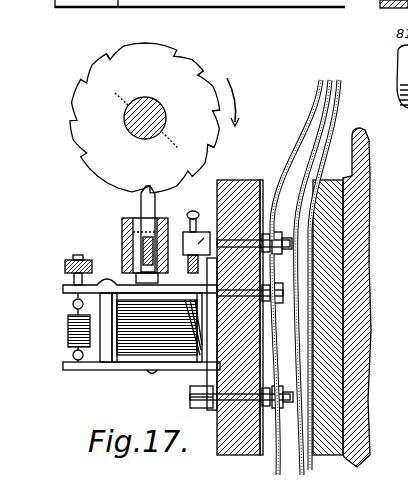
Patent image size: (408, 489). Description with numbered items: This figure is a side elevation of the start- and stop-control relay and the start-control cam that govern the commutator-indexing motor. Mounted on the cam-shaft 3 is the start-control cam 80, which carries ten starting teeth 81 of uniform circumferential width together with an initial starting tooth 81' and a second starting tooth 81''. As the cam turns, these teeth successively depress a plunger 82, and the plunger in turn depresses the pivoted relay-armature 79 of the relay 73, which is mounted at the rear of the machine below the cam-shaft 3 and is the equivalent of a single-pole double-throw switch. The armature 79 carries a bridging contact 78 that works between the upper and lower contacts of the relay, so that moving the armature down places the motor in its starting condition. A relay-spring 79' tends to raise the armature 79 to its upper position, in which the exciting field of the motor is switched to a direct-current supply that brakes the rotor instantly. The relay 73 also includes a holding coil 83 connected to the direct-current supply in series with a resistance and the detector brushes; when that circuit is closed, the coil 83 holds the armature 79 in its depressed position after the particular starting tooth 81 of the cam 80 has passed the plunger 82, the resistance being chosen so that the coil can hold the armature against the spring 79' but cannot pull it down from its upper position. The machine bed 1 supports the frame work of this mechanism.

The bed 1 is at (357, 133).
The cam-shaft 3 is at (166, 108).
The relay 73 is at (240, 182).
The bridging contact 78 is at (190, 298).
The relay-armature 79 is at (88, 264).
The relay-spring 79' is at (58, 327).
The start-control cam 80 is at (181, 78).
The starting teeth 81 is at (169, 98).
The initial starting tooth 81' is at (122, 228).
The second starting tooth 81'' is at (185, 231).
The plunger 82 is at (141, 205).
The holding coil 83 is at (130, 347).